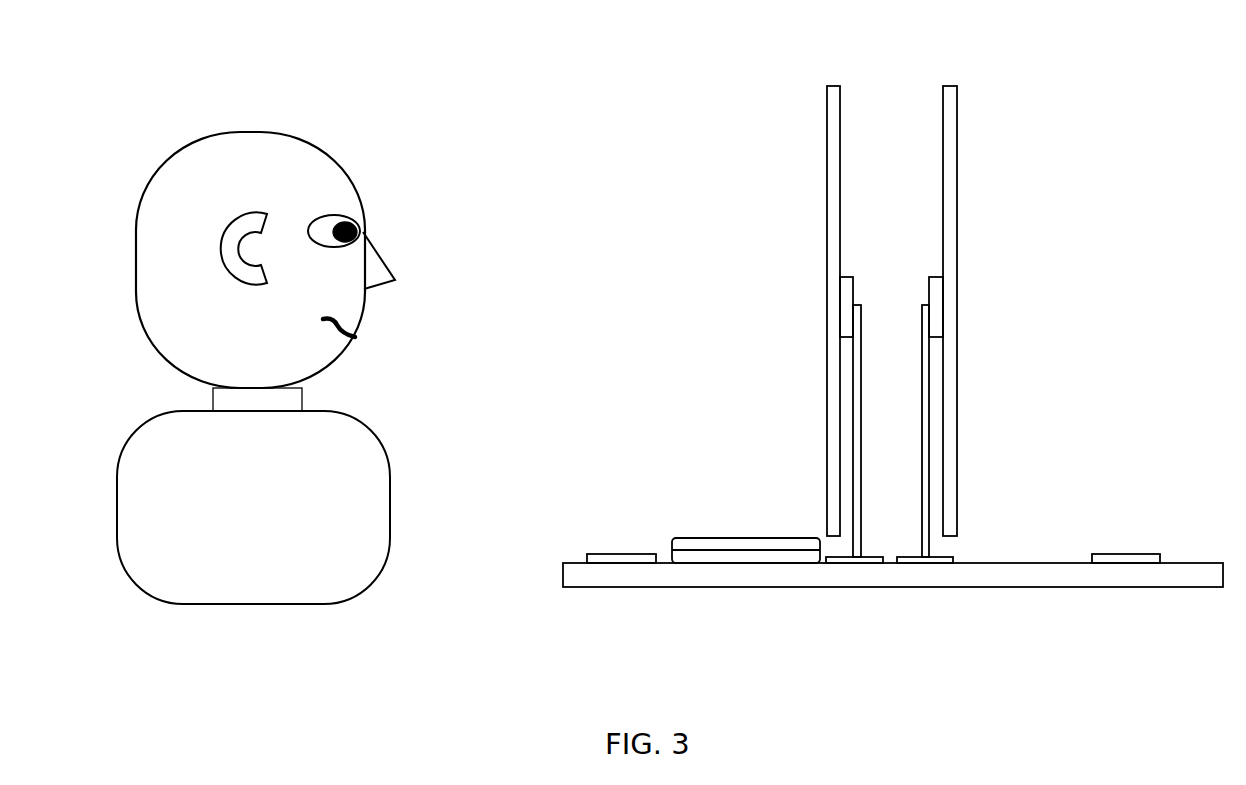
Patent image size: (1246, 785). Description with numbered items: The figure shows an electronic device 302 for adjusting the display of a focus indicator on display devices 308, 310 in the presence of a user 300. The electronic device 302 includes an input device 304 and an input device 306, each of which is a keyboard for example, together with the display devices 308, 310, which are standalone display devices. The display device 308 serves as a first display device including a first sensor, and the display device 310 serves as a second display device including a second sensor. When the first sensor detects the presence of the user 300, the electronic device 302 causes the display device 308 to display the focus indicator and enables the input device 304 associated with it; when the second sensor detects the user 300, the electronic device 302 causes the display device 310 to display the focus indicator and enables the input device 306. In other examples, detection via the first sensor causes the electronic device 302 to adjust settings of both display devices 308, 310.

The user 300 is at (117, 508).
The electronic device 302 is at (688, 538).
The input device 304 is at (598, 554).
The input device 306 is at (1102, 554).
The display device 308 is at (833, 86).
The display device 310 is at (948, 86).